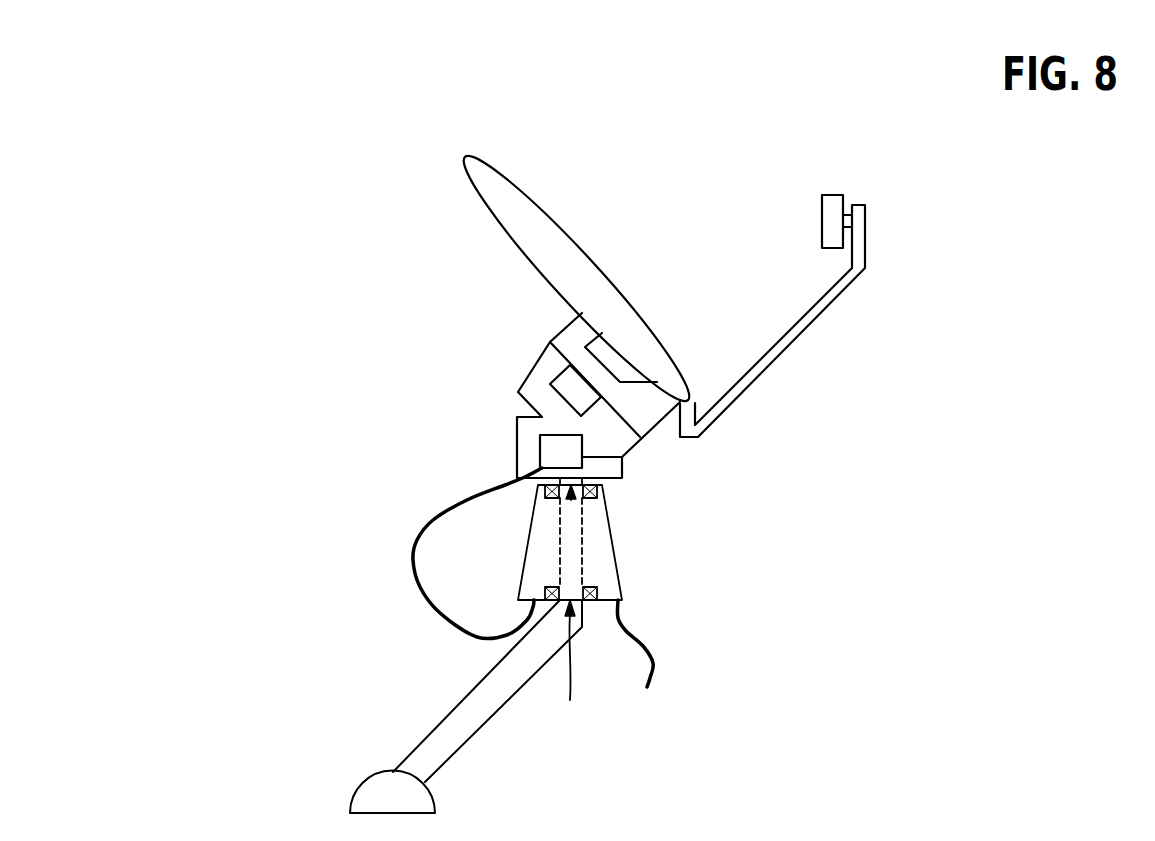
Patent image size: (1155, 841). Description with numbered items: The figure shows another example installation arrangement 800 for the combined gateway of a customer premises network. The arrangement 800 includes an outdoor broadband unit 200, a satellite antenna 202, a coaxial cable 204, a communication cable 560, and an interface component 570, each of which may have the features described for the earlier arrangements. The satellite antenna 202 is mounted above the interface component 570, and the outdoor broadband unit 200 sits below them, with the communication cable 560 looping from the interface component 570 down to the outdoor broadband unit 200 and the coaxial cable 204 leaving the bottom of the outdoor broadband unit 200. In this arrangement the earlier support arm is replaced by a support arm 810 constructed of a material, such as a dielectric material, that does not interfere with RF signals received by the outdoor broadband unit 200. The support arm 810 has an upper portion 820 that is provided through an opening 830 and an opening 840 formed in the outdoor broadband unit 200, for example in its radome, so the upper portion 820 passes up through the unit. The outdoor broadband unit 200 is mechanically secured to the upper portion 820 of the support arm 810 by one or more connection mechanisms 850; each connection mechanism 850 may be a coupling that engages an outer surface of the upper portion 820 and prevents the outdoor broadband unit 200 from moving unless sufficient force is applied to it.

The installation arrangement 800 is at (131, 26).
The satellite antenna 202 is at (556, 247).
The interface component 570 is at (572, 455).
The communication cable 560 is at (413, 560).
The outdoor broadband unit 200 is at (691, 539).
The upper portion 820 is at (572, 556).
The connection mechanism 850 is at (597, 490).
The opening 840 is at (572, 499).
The opening 830 is at (586, 663).
The support arm 810 is at (477, 702).
The coaxial cable 204 is at (657, 678).